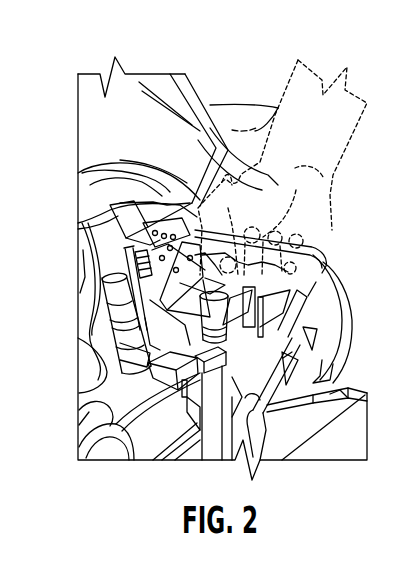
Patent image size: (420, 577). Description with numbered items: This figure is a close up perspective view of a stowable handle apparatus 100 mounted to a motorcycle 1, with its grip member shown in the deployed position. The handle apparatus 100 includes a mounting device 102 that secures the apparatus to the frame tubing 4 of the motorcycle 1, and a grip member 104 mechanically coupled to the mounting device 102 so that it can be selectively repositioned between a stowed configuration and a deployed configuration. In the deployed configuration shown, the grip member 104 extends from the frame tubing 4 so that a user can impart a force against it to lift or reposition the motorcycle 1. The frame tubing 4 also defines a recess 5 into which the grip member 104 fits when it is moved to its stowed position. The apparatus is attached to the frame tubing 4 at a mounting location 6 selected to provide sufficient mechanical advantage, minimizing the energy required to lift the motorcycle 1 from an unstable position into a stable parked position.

The stowable handle apparatus 100 is at (96, 97).
The mounting device 102 is at (139, 197).
The grip member 104 is at (210, 178).
The motorcycle 1 is at (112, 168).
The mounting location 6 is at (130, 215).
The frame tubing 4 is at (140, 320).
The recess 5 is at (95, 343).